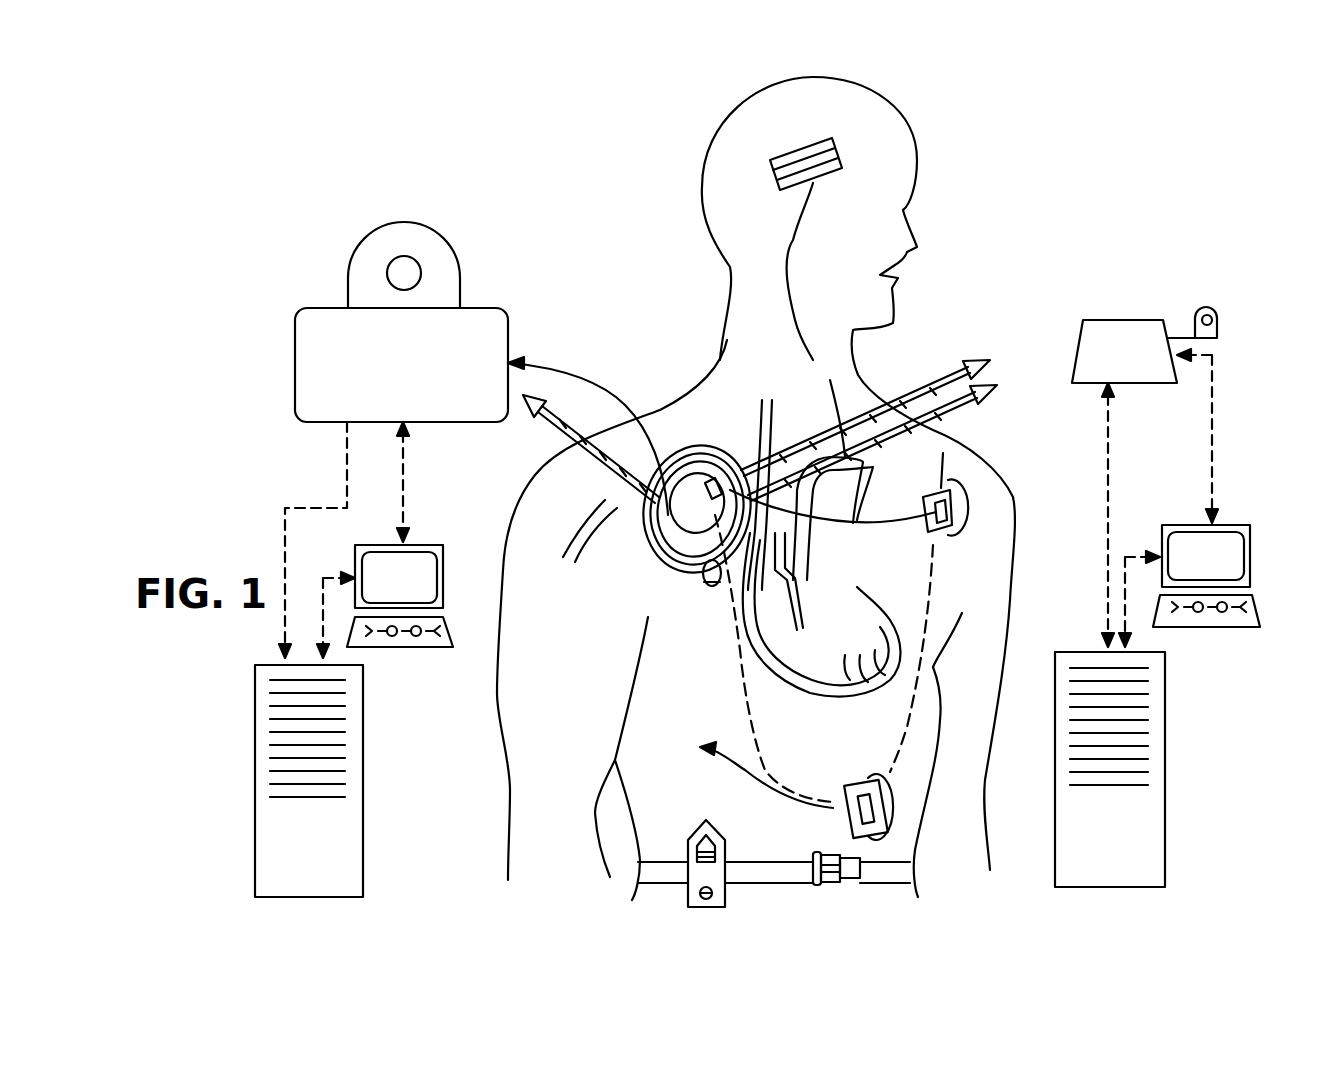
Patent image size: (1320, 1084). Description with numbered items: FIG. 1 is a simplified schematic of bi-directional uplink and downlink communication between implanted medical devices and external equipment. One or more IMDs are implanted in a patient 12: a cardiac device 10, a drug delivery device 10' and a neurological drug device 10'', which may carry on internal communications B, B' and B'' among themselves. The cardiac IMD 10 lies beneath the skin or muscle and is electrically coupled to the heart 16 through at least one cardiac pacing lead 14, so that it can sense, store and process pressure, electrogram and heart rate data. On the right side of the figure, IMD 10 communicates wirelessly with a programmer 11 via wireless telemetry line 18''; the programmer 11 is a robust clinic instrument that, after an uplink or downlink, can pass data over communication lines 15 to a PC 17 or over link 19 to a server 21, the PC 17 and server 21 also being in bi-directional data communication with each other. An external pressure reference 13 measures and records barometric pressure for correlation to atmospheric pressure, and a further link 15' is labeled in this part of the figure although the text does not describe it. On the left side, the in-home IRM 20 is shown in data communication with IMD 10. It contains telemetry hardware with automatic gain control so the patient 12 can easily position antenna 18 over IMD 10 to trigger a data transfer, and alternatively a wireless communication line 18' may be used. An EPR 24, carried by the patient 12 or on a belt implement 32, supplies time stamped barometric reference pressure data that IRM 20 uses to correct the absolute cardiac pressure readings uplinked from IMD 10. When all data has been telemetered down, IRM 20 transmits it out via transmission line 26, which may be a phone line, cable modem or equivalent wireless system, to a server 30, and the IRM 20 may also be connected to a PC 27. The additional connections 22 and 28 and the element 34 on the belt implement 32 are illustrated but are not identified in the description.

The cardiac device (IMD) 10 is at (686, 508).
The drug delivery device 10' is at (796, 791).
The neurological drug device 10'' is at (964, 507).
The programmer 11 is at (1127, 320).
The patient 12 is at (985, 455).
The external pressure reference (EPR) 13 is at (1212, 312).
The cardiac pacing lead 14 is at (710, 586).
The communication lines 15 is at (1223, 436).
The data link 15' is at (1139, 572).
The heart 16 is at (833, 697).
The PC 17 is at (1250, 557).
The antenna 18 is at (757, 513).
The wireless communication line 18' is at (575, 449).
The wireless telemetry line 18'' is at (869, 412).
The link 19 is at (1108, 470).
The IRM 20 is at (508, 308).
The server 21 is at (1165, 713).
The communication link 22 is at (403, 487).
The EPR (external pressure reference) 24 is at (430, 225).
The transmission line 26 is at (297, 505).
The PC 27 is at (443, 575).
The communication link 28 is at (328, 576).
The server 30 is at (363, 757).
The belt implement 32 is at (785, 883).
The belt clip 34 is at (688, 897).
The internal communication B is at (912, 513).
The internal communication B' is at (936, 657).
The internal communication B'' is at (748, 658).